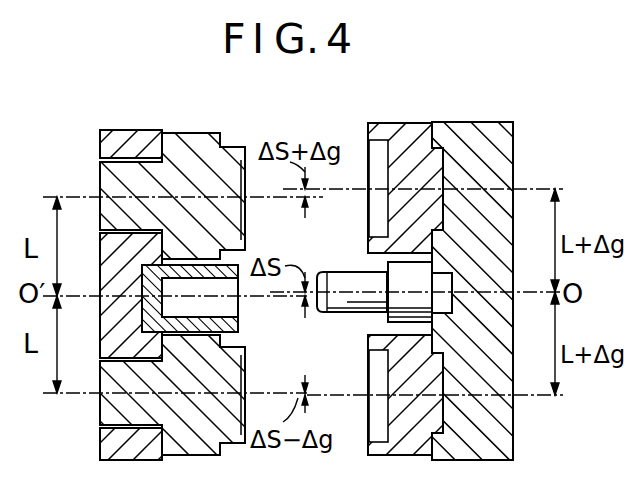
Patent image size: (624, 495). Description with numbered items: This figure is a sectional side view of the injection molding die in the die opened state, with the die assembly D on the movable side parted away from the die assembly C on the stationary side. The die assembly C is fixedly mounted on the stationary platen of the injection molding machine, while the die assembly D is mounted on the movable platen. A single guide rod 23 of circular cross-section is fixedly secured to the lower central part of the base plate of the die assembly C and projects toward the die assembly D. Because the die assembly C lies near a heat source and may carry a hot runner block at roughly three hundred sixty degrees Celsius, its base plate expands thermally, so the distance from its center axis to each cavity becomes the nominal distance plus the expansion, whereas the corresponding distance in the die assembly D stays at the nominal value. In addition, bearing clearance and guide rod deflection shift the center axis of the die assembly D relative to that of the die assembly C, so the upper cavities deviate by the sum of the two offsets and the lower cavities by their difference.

The guide rod 23 is at (340, 300).
The die assembly D is at (243, 118).
The die assembly C is at (513, 118).